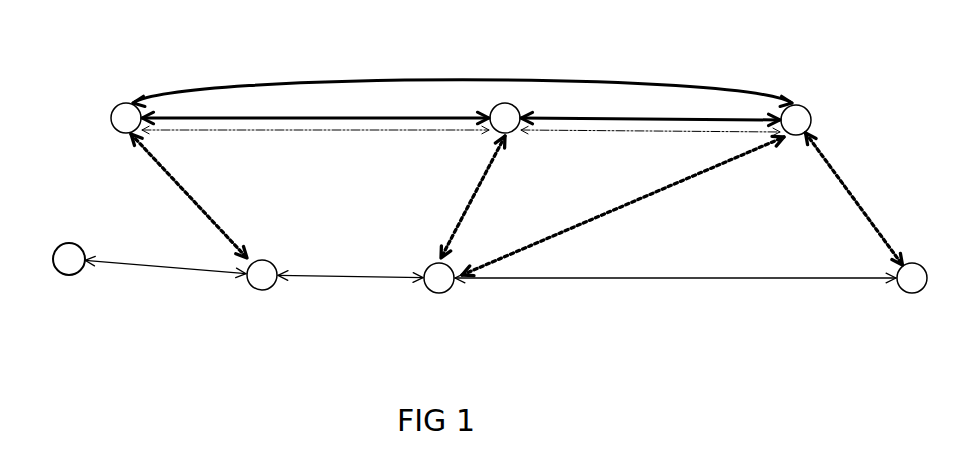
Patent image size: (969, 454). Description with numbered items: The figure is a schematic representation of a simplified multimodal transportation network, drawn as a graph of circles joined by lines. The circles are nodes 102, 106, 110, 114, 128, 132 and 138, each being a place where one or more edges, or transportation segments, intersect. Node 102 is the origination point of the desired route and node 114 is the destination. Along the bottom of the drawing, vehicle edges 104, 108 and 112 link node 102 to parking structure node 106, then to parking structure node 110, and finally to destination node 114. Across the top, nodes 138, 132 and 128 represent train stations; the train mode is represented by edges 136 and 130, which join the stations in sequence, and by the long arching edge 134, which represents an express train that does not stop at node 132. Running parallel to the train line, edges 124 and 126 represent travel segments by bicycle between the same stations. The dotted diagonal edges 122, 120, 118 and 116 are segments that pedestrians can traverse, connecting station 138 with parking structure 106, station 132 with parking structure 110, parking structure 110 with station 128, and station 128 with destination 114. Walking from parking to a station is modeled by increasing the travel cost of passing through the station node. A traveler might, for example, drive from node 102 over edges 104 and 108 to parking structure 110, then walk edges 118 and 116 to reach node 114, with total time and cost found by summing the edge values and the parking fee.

The node 102 is at (57, 273).
The edge 104 is at (180, 270).
The node 106 is at (253, 288).
The edge 108 is at (345, 277).
The node 110 is at (439, 292).
The edge 112 is at (700, 280).
The node 114 is at (894, 288).
The edge 116 is at (850, 192).
The edge 118 is at (690, 172).
The edge 120 is at (484, 178).
The edge 122 is at (172, 178).
The edge 124 is at (243, 131).
The edge 126 is at (583, 128).
The node 128 is at (807, 108).
The edge 130 is at (665, 116).
The node 132 is at (507, 104).
The edge 134 is at (408, 81).
The edge 136 is at (360, 116).
The node 138 is at (110, 112).